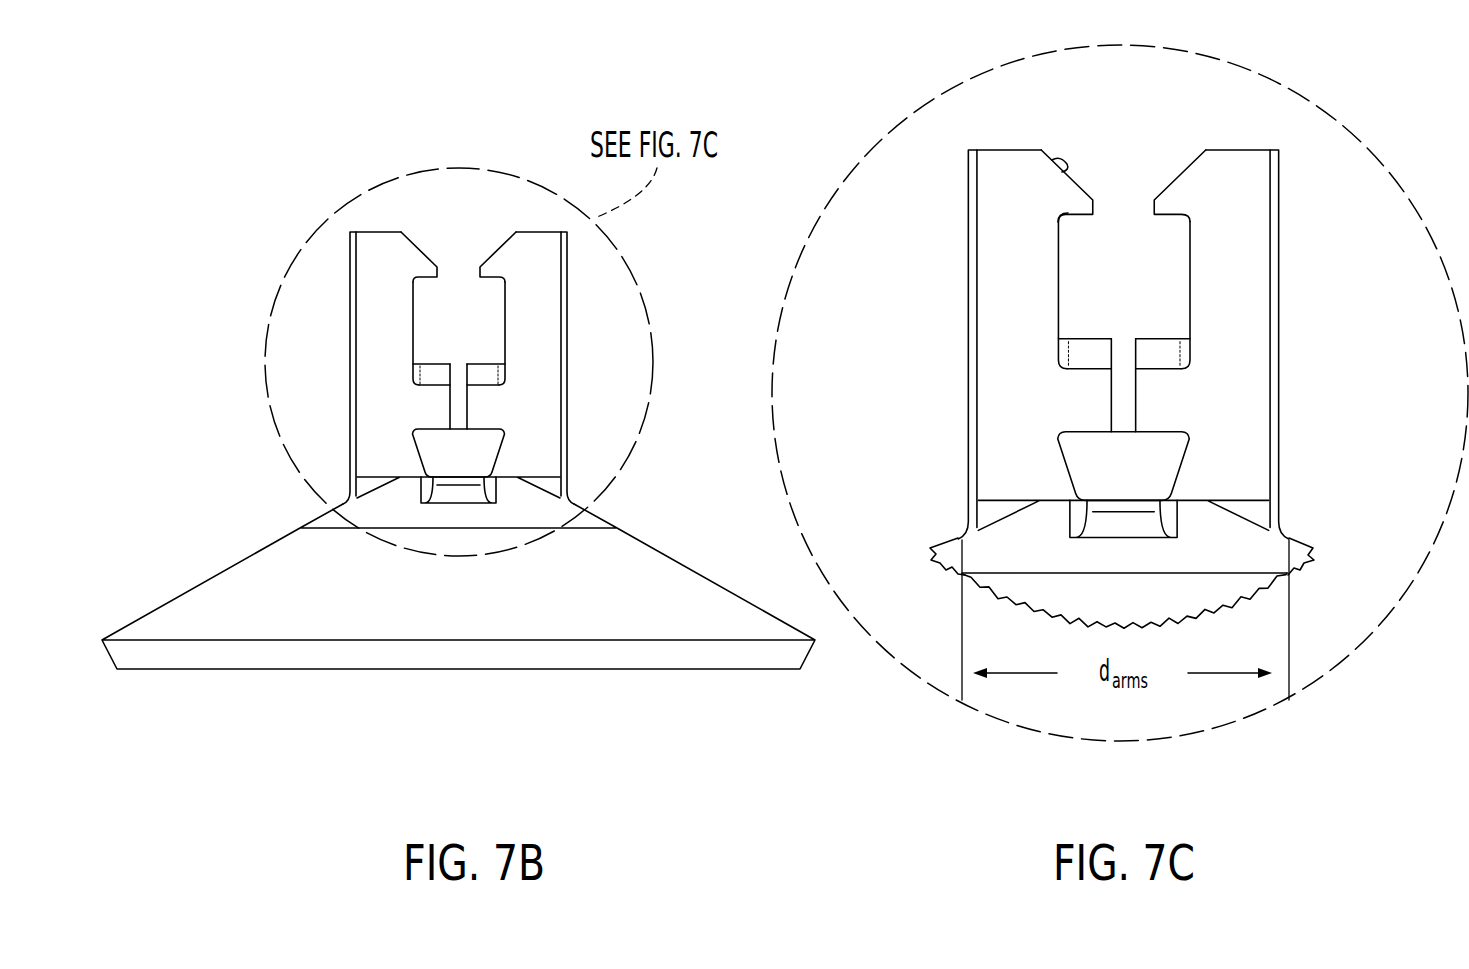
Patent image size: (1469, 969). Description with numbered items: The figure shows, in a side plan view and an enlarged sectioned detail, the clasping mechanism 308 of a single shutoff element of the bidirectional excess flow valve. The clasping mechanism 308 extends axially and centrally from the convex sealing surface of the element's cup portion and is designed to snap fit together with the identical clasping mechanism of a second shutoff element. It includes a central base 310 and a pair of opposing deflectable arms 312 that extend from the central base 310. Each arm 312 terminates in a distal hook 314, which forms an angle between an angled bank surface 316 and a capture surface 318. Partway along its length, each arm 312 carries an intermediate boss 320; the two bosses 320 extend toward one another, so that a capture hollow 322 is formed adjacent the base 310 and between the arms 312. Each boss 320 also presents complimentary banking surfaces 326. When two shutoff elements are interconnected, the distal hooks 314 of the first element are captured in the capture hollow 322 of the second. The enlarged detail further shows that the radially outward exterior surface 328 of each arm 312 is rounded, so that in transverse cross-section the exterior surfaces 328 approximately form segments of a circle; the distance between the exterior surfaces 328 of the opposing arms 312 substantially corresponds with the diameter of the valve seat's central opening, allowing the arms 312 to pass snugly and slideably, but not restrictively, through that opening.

In FIG. 7B, the clasping mechanism 308 is at (212, 152).
In FIG. 7C, the clasping mechanism 308 is at (896, 90).
In FIG. 7B, the central base 310 is at (590, 523).
In FIG. 7C, the central base 310 is at (965, 563).
In FIG. 7B, the deflectable arm 312 is at (373, 257).
In FIG. 7C, the deflectable arm 312 is at (988, 182).
In FIG. 7B, the distal hook 314 is at (478, 264).
In FIG. 7C, the distal hook 314 is at (1092, 195).
In FIG. 7C, the angled bank surface 316 is at (1060, 168).
In FIG. 7C, the capture surface 318 is at (1063, 218).
In FIG. 7B, the intermediate boss 320 is at (435, 412).
In FIG. 7C, the intermediate boss 320 is at (1052, 402).
In FIG. 7B, the capture hollow 322 is at (474, 468).
In FIG. 7C, the capture hollow 322 is at (1142, 478).
In FIG. 7B, the banking surface 326 is at (432, 372).
In FIG. 7C, the banking surface 326 is at (1157, 352).
In FIG. 7B, the radially outward exterior surface 328 is at (350, 318).
In FIG. 7C, the radially outward exterior surface 328 is at (967, 348).